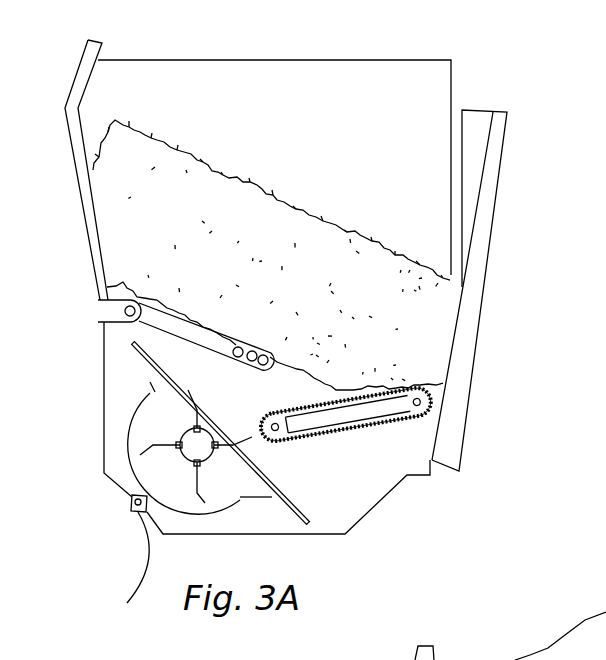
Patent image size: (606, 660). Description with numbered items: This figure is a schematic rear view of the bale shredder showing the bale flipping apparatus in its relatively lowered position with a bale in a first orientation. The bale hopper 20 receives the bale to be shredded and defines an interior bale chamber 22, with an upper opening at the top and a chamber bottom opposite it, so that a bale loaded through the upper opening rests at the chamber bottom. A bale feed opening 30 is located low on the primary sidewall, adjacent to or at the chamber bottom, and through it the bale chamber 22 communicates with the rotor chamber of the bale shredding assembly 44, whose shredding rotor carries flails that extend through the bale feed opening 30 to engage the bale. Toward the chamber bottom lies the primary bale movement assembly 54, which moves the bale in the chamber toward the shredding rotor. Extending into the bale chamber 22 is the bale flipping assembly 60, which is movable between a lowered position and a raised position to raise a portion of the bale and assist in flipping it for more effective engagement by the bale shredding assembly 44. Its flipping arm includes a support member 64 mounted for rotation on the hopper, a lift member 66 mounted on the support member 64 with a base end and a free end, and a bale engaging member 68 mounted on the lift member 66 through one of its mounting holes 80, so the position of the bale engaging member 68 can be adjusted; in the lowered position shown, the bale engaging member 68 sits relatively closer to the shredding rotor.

The bale hopper 20 is at (305, 95).
The interior bale chamber 22 is at (382, 103).
The bale feed opening 30 is at (272, 475).
The bale shredding assembly 44 is at (178, 467).
The primary bale movement assembly 54 is at (330, 440).
The bale flipping assembly 60 is at (157, 329).
The support member 64 is at (125, 314).
The lift member 66 is at (197, 336).
The bale engaging member 68 is at (255, 347).
The mounting hole 80 is at (303, 333).